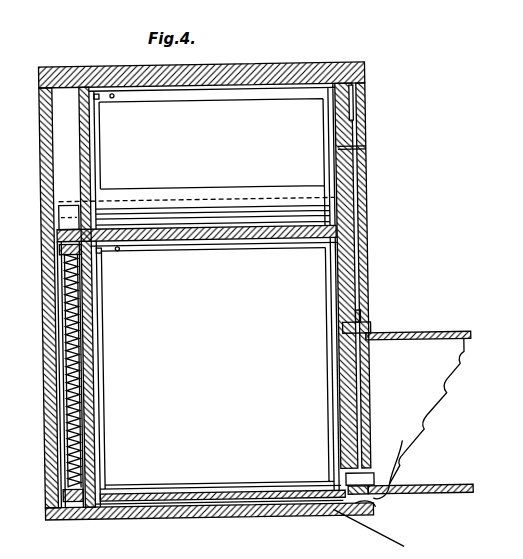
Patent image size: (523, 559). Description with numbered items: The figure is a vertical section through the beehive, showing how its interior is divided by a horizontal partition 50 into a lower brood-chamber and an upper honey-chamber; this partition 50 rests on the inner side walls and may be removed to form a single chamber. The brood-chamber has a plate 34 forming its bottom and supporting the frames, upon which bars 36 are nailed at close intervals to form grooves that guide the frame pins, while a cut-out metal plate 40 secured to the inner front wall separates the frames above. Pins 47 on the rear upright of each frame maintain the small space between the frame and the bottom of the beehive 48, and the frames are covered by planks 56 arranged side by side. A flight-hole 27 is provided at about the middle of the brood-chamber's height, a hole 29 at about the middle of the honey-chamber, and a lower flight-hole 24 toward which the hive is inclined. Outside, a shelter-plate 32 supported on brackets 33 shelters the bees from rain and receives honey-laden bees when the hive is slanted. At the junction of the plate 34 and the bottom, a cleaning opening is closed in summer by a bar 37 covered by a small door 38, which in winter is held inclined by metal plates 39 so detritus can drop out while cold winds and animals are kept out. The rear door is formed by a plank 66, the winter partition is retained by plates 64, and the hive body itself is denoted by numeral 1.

The window frame 1 is at (106, 67).
The metal plate 40 is at (340, 67).
The hole 29 is at (368, 152).
The planks 56 is at (84, 162).
The horizontal partition 50 is at (214, 261).
The pins 47 is at (340, 270).
The bottom of the beehive 48 is at (340, 310).
The flight-hole 27 is at (372, 338).
The shelter-plate 32 is at (417, 324).
The brackets 33 is at (426, 411).
The plank 66 is at (55, 310).
The plates 64 is at (72, 468).
The flight-hole 24 is at (389, 465).
The bars 36 is at (218, 372).
The plate 34 is at (124, 520).
The bar 37 is at (378, 502).
The small door 38 is at (365, 515).
The metal plates 39 is at (380, 533).